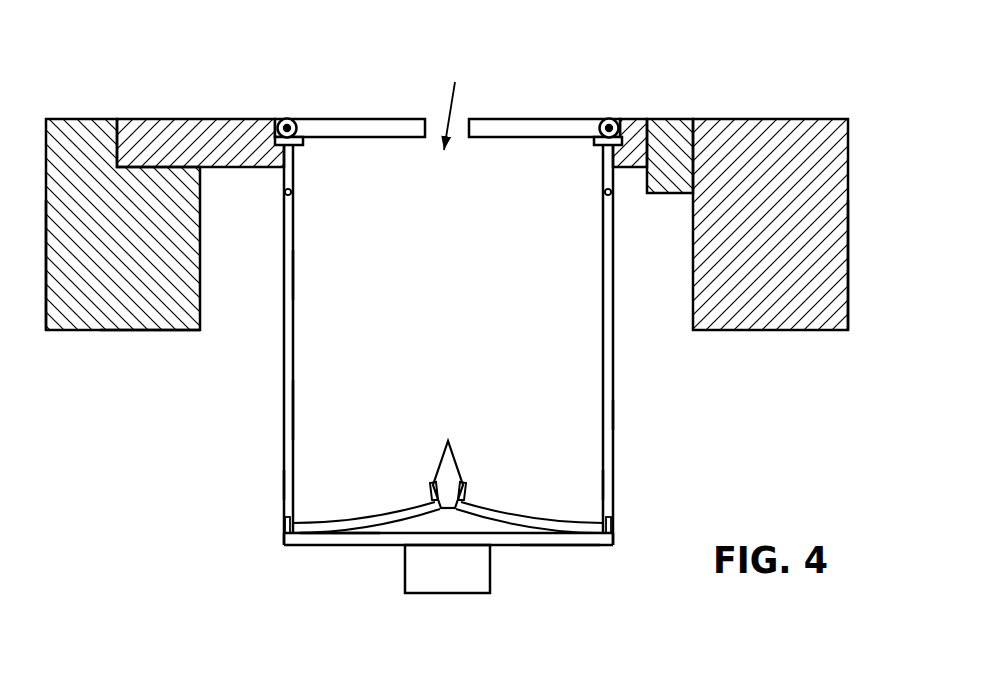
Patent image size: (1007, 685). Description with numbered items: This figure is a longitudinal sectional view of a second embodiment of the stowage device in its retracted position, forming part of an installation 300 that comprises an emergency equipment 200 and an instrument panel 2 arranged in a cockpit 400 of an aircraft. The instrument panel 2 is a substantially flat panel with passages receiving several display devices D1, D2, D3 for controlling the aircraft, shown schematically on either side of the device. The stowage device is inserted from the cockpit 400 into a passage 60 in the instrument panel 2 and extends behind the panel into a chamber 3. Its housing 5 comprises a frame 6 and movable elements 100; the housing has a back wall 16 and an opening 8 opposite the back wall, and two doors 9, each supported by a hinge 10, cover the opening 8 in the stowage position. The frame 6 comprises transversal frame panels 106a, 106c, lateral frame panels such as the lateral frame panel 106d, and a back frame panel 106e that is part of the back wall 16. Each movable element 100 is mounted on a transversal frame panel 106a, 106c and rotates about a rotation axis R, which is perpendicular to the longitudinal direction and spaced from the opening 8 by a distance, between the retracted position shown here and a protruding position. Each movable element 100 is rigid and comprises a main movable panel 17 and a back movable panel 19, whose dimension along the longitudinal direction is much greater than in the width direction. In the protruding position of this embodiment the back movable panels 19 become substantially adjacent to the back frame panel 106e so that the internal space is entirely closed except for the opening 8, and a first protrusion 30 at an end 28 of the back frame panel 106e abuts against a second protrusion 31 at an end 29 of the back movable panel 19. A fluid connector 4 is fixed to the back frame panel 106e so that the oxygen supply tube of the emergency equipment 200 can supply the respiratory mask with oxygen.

The cockpit 400 is at (60, 179).
The display device D1 is at (87, 130).
The instrument panel 2 is at (145, 117).
The passage 60 is at (283, 158).
The hinge 10 is at (282, 119).
The door 9 is at (375, 127).
The opening 8 is at (453, 103).
The display device D2 is at (672, 130).
The display device D3 is at (807, 130).
The installation 300 is at (852, 90).
The transversal frame panel 106a is at (290, 180).
The transversal frame panel 106c is at (603, 180).
The rotation axis R is at (285, 193).
The chamber 3 is at (243, 287).
The main movable panel 17 is at (283, 362).
The lateral frame panel 106d is at (338, 409).
The movable element 100 is at (258, 477).
The back movable panel 19 is at (375, 513).
The second protrusion 31 is at (448, 442).
The housing 5 is at (640, 485).
The first protrusion 30 is at (284, 525).
The emergency equipment 200 is at (168, 543).
The end of the back frame panel 28 is at (287, 547).
The back wall 16 is at (305, 558).
The back frame panel 106e is at (342, 540).
The end of the back movable panel 29 is at (439, 514).
The fluid connector 4 is at (435, 580).
The frame 6 is at (560, 550).